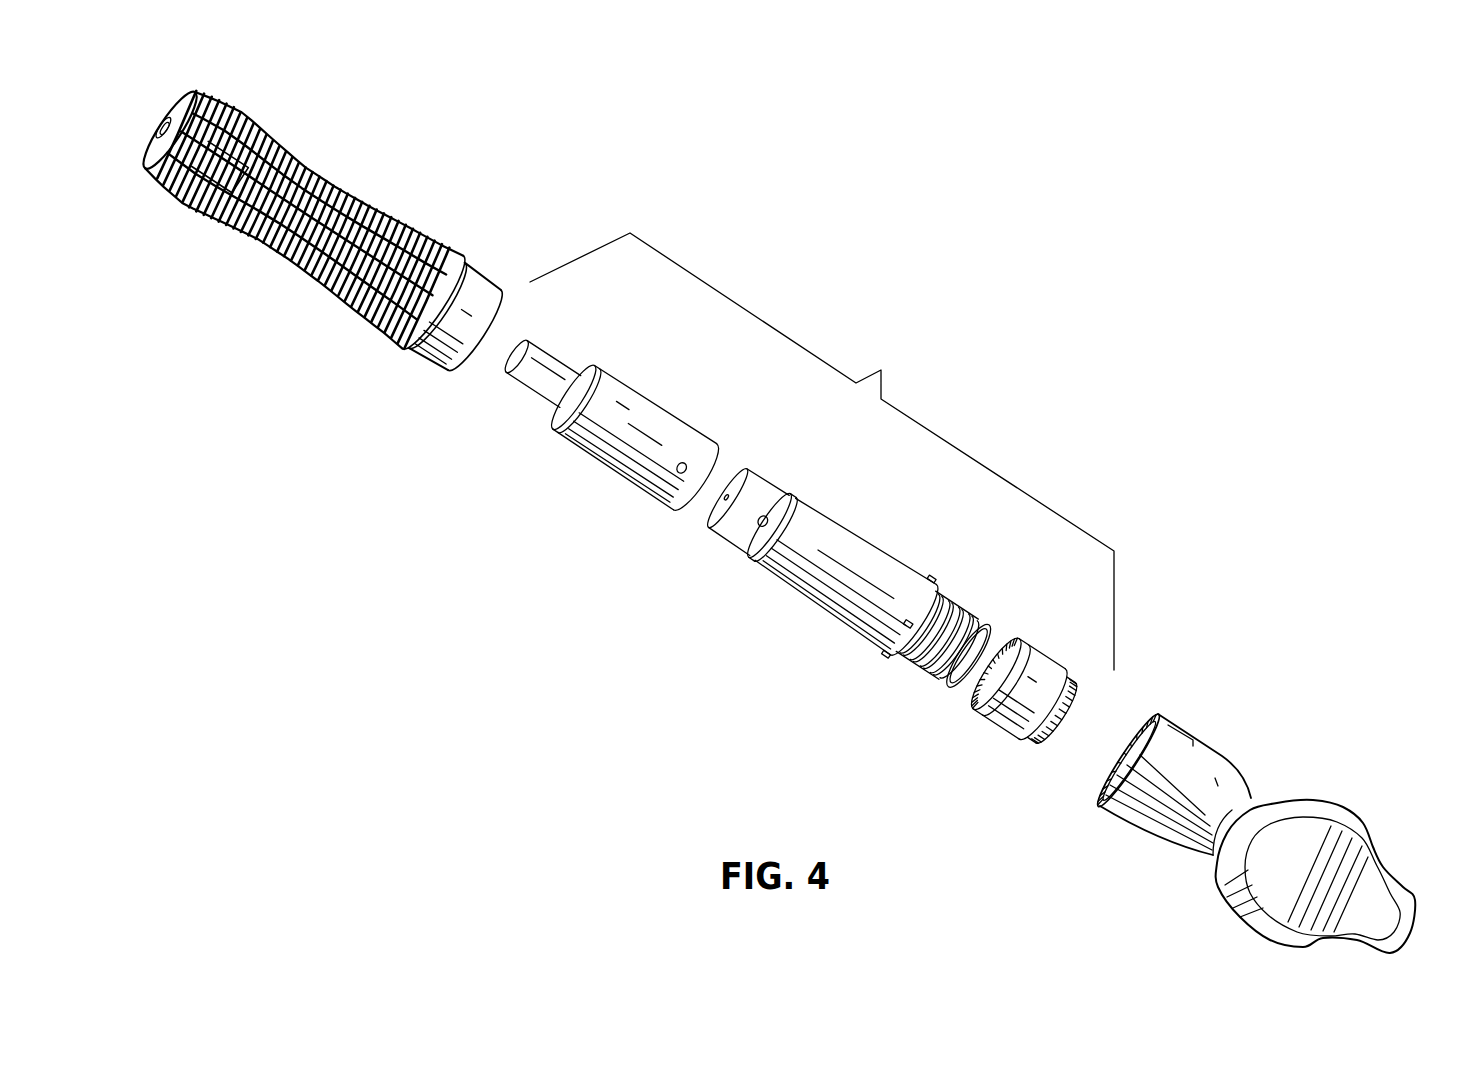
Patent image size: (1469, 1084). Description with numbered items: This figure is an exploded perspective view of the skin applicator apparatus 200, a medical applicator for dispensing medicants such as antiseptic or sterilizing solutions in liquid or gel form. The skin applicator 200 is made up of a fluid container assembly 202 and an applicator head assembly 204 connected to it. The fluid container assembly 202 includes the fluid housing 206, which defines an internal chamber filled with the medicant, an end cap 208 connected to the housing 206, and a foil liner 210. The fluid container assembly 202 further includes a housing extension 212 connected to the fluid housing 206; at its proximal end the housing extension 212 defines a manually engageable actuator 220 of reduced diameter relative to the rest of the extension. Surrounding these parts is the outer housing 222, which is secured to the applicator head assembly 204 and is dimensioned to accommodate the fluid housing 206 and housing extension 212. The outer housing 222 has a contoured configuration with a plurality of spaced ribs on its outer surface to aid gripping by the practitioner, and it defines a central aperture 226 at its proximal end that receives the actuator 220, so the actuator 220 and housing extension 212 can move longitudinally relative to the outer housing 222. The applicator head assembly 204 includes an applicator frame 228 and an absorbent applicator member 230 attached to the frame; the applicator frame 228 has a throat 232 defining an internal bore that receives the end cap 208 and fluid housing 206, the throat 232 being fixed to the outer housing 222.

The skin applicator apparatus 200 is at (656, 617).
The fluid container assembly 202 is at (822, 451).
The applicator head assembly 204 is at (1171, 776).
The fluid housing 206 is at (831, 593).
The end cap 208 is at (992, 727).
The foil liner 210 is at (957, 683).
The housing extension 212 is at (607, 479).
The manually engageable actuator 220 is at (534, 344).
The outer housing 222 is at (372, 222).
The central aperture 226 is at (160, 127).
The applicator frame 228 is at (1247, 777).
The absorbent applicator member 230 is at (1353, 892).
The throat 232 is at (1167, 753).